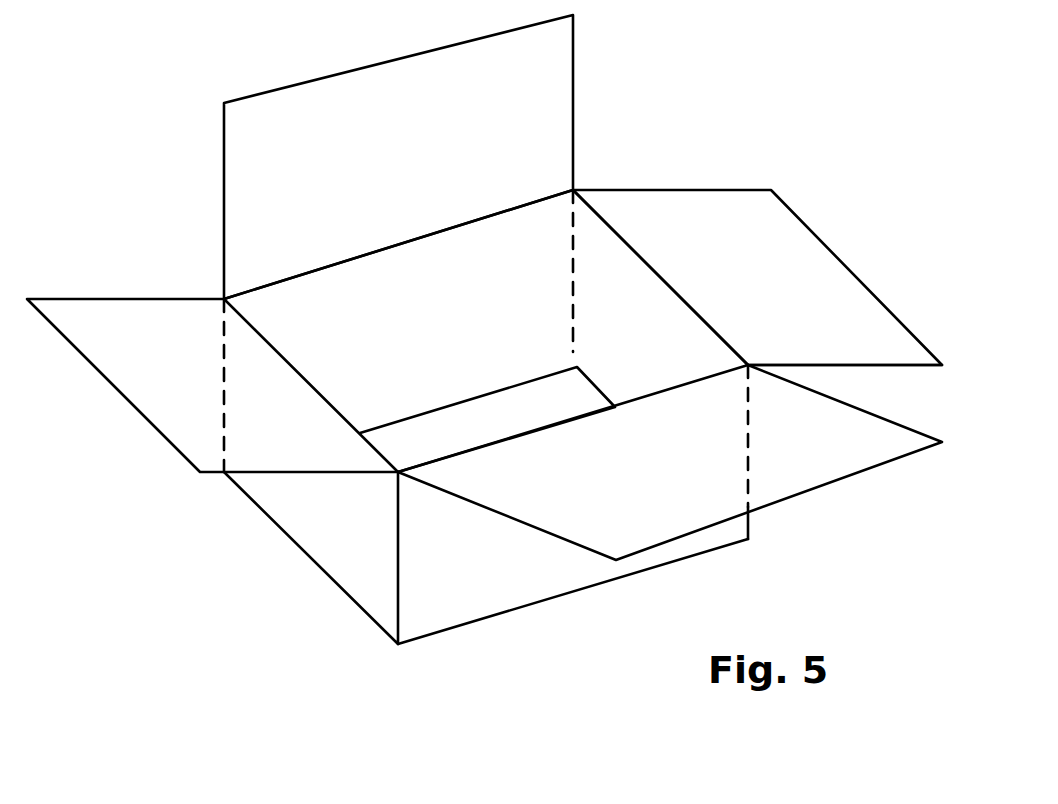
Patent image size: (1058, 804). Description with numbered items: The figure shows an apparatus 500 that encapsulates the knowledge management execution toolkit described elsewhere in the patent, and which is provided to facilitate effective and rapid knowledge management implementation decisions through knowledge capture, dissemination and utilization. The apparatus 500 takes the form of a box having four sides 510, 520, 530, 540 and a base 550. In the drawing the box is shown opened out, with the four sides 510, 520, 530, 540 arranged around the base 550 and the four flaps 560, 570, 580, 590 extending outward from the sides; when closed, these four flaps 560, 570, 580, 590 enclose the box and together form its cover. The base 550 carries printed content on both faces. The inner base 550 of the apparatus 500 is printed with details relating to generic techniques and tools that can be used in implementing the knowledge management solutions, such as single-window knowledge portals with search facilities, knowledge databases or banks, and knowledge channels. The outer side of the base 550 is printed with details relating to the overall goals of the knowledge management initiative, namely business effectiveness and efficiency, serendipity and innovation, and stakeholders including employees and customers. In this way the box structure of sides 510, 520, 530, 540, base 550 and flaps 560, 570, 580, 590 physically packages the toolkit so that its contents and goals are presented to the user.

The apparatus 500 is at (763, 100).
The side 510 is at (377, 552).
The side 520 is at (477, 591).
The side 530 is at (662, 356).
The side 540 is at (527, 291).
The base 550 is at (505, 437).
The flap 560 is at (158, 346).
The flap 570 is at (829, 457).
The flap 580 is at (787, 279).
The flap 590 is at (404, 167).